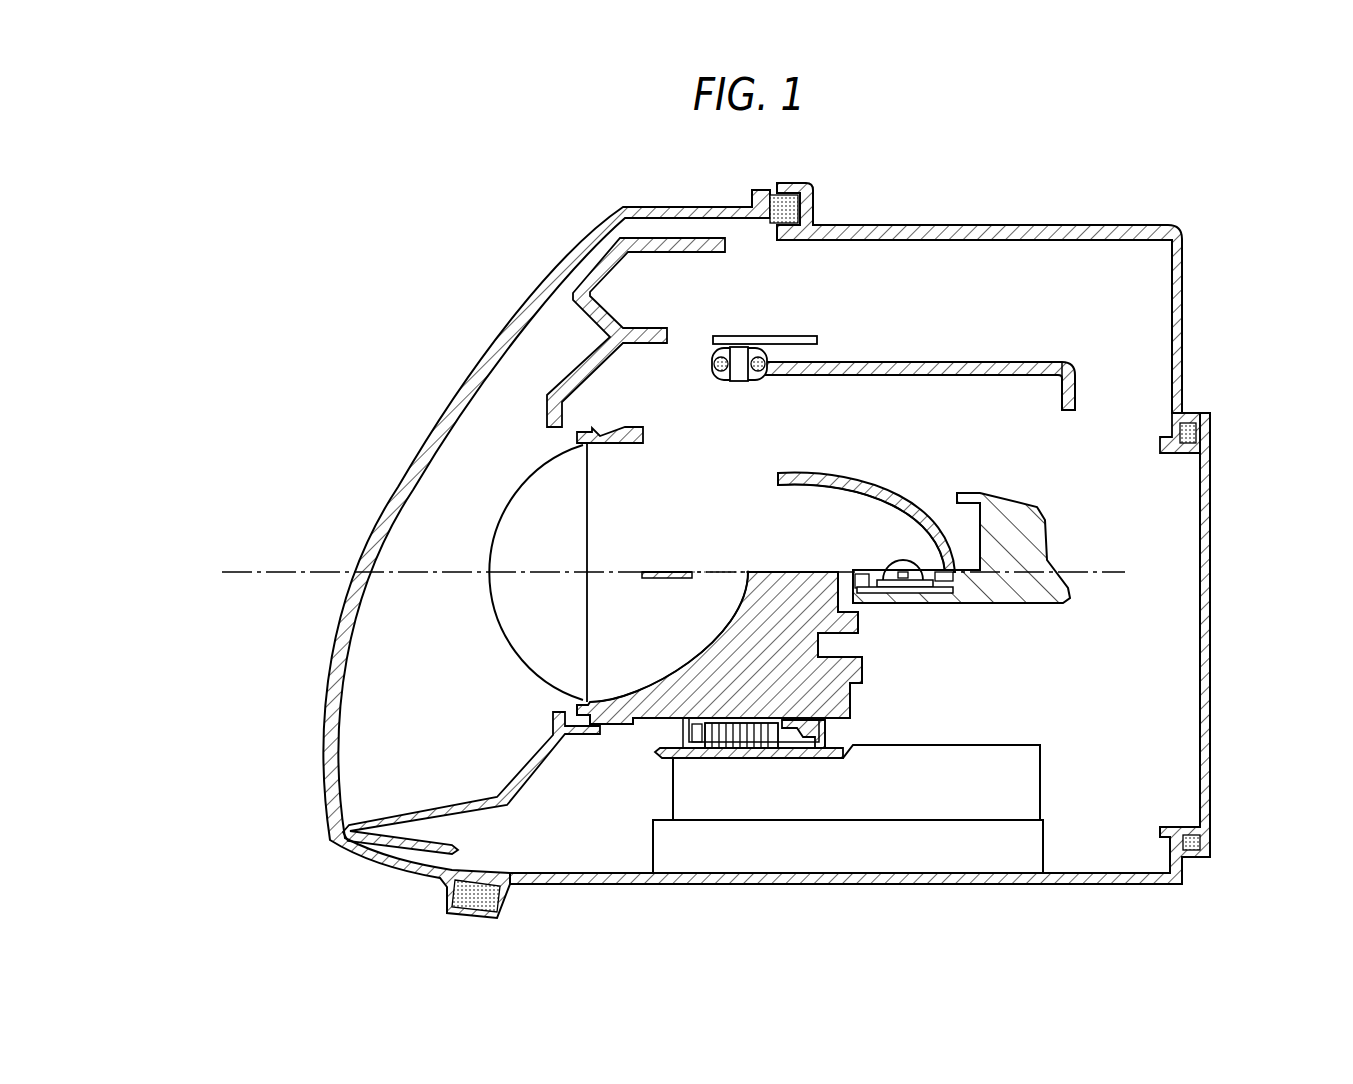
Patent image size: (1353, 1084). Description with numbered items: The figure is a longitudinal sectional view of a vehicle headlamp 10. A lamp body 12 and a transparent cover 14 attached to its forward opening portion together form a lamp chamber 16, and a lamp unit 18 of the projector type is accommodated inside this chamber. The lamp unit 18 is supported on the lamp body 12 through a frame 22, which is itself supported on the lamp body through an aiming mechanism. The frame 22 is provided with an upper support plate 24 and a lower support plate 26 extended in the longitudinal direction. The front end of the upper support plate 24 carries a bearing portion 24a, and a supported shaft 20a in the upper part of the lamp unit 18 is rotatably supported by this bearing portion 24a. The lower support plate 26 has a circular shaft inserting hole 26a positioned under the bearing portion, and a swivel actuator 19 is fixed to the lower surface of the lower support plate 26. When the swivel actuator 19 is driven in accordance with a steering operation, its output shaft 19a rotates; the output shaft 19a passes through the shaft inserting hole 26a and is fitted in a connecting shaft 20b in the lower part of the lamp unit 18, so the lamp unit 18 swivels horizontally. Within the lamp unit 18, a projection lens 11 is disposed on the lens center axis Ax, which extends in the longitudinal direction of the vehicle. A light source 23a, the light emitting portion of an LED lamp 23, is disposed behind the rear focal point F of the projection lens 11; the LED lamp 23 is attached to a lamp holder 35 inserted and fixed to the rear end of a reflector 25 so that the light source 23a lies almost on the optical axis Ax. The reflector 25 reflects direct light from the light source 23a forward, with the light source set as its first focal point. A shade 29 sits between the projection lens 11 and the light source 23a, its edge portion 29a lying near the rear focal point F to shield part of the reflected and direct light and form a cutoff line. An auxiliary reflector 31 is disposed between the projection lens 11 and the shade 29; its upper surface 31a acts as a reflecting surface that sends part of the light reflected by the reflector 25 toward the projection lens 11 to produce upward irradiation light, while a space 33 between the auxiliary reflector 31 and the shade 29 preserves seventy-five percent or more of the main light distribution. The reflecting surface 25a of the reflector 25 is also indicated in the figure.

The vehicle headlamp 10 is at (935, 212).
The projection lens 11 is at (530, 515).
The lamp body 12 is at (1043, 225).
The transparent cover 14 is at (510, 325).
The lamp chamber 16 is at (1178, 688).
The lamp unit 18 is at (500, 678).
The swivel actuator 19 is at (1002, 780).
The output shaft 19a is at (745, 752).
The supported shaft 20a is at (740, 358).
The connecting shaft 20b is at (830, 730).
The frame 22 is at (1010, 355).
The LED lamp 23 is at (903, 555).
The light source 23a is at (893, 587).
The upper support plate 24 is at (877, 363).
The bearing portion 24a is at (712, 368).
The reflector 25 is at (866, 478).
The reflecting surface 25a is at (840, 490).
The lower support plate 26 is at (659, 763).
The shaft inserting hole 26a is at (780, 760).
The shade 29 is at (716, 650).
The edge portion 29a is at (748, 570).
The auxiliary reflector 31 is at (672, 563).
The upper surface 31a is at (660, 572).
The space 33 is at (748, 588).
The lamp holder 35 is at (1047, 513).
The rear focal point F is at (750, 570).
The lens center axis Ax is at (283, 570).